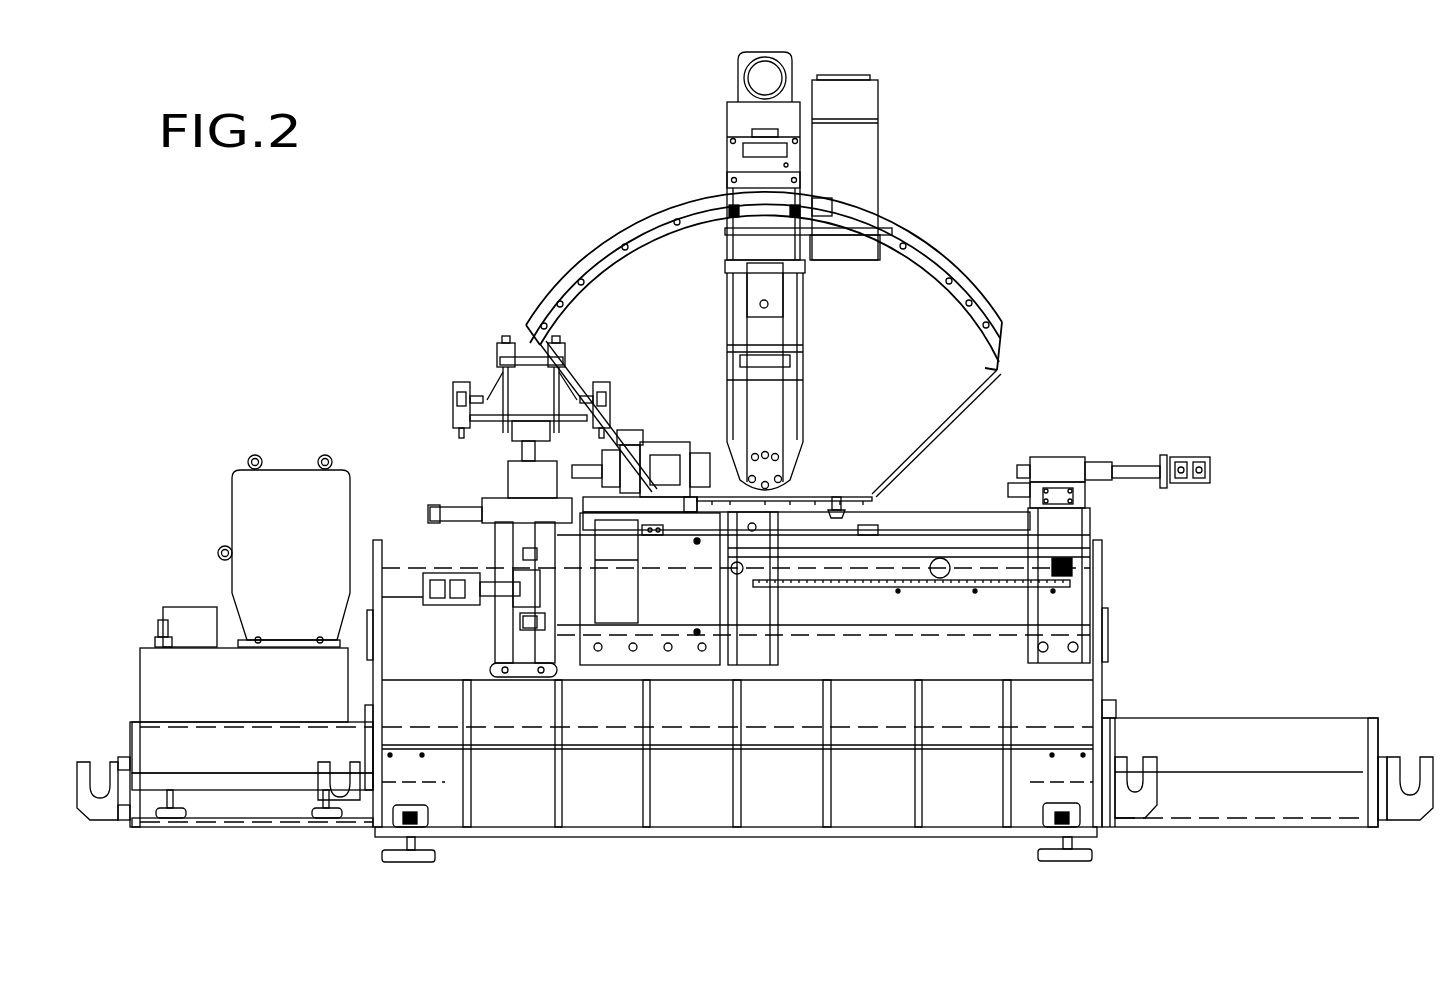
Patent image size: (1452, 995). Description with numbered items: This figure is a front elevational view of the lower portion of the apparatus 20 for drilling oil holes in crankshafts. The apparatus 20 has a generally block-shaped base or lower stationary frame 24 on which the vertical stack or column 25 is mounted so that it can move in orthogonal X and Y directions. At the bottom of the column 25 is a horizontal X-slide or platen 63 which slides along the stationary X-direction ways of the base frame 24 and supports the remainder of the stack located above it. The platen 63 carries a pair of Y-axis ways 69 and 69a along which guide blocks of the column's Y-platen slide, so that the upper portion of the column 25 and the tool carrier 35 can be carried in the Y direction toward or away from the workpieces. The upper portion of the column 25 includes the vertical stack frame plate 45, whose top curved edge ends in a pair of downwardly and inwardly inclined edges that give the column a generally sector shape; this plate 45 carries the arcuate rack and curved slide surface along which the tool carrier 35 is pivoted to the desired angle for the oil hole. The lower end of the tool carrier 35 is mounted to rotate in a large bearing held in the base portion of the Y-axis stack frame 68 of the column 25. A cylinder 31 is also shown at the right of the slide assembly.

The apparatus 20 is at (1060, 361).
The base or lower stationary frame 24 is at (1106, 682).
The vertical stack or column 25 is at (896, 193).
The positioning cylinder 31 is at (1048, 463).
The tool carrier 35 is at (813, 322).
The vertical stack frame member or plate 45 is at (962, 415).
The X-slide or platen 63 is at (890, 527).
The Y-axis stack frame 68 is at (806, 492).
The Y-axis way 69 is at (842, 493).
The Y-axis way 69a is at (684, 497).